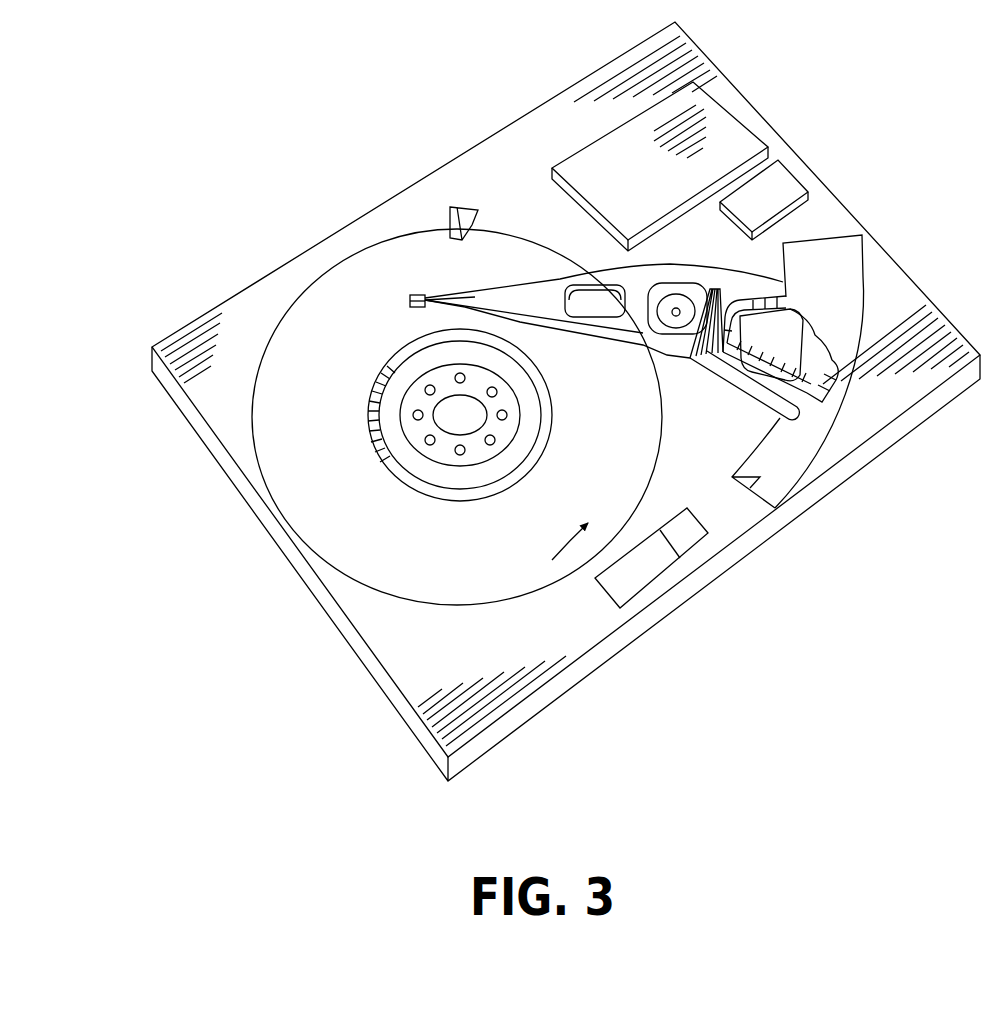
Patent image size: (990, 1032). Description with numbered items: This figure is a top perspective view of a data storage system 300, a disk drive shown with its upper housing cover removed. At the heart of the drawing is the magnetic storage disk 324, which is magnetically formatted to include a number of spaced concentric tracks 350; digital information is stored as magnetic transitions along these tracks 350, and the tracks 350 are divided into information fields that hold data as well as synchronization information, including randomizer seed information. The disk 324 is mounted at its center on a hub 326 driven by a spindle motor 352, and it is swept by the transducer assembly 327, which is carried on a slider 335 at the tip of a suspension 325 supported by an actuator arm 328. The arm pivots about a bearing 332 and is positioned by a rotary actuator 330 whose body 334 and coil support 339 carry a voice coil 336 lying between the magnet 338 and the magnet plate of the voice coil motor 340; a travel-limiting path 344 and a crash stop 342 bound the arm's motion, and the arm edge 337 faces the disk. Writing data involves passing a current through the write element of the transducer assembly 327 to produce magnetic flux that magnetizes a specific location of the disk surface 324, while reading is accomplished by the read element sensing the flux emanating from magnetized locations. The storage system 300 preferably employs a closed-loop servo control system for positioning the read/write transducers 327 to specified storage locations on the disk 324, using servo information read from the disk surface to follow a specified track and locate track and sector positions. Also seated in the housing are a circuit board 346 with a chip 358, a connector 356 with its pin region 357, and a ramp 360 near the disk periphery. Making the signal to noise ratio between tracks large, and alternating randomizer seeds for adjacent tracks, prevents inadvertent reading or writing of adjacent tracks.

The data storage system 300 is at (278, 150).
The disk 324 is at (306, 409).
The suspension 325 is at (500, 321).
The spindle 326 is at (473, 437).
The transducer assembly 327 is at (416, 310).
The actuator arm 328 is at (510, 297).
The actuator 330 is at (693, 352).
The pivot bearing 332 is at (676, 308).
The actuator body 334 is at (722, 289).
The slider 335 is at (417, 295).
The voice coil 336 is at (745, 328).
The actuator arm edge 337 is at (668, 362).
The magnet 338 is at (872, 262).
The coil support arm 339 is at (772, 411).
The voice coil motor 340 is at (853, 302).
The crash stop 342 is at (750, 485).
The arm travel path 344 is at (847, 398).
The circuit board 346 is at (648, 195).
The tracks 350 is at (373, 382).
The motor hub 352 is at (370, 440).
The connector 356 is at (656, 581).
The connector pin 357 is at (700, 542).
The chip 358 is at (778, 207).
The ramp 360 is at (462, 203).